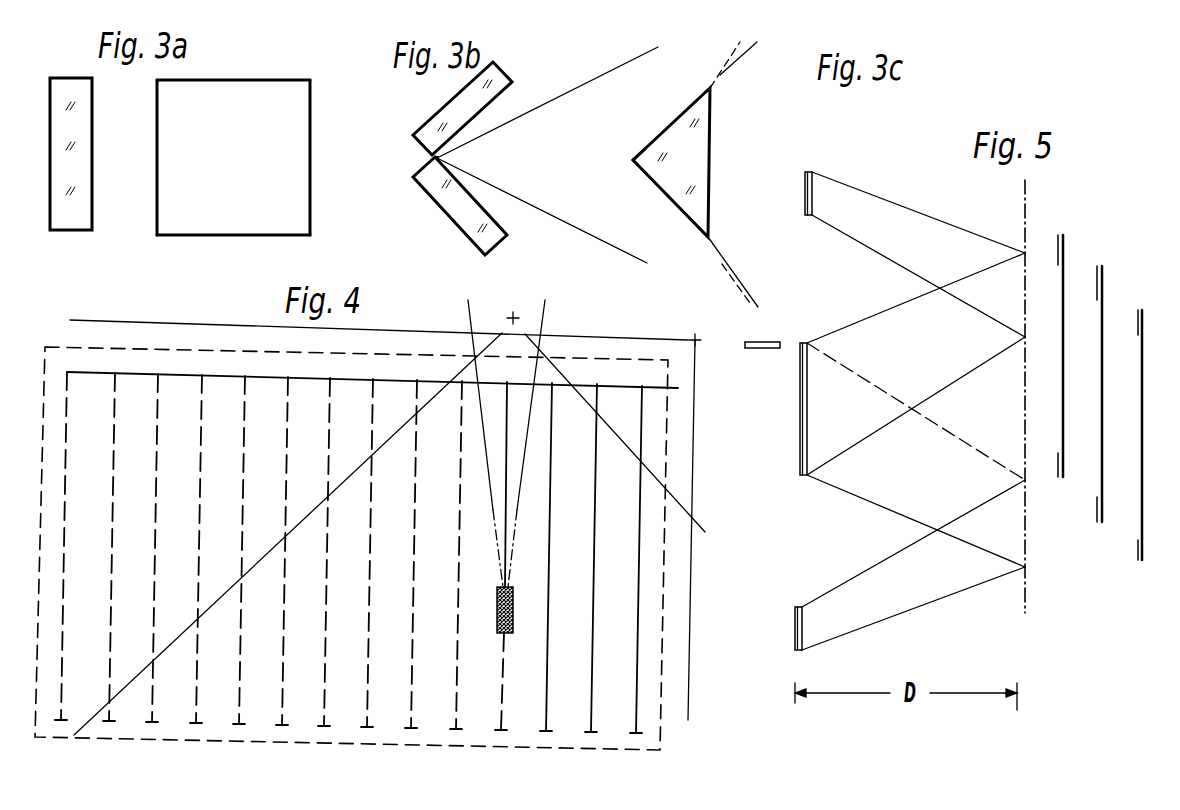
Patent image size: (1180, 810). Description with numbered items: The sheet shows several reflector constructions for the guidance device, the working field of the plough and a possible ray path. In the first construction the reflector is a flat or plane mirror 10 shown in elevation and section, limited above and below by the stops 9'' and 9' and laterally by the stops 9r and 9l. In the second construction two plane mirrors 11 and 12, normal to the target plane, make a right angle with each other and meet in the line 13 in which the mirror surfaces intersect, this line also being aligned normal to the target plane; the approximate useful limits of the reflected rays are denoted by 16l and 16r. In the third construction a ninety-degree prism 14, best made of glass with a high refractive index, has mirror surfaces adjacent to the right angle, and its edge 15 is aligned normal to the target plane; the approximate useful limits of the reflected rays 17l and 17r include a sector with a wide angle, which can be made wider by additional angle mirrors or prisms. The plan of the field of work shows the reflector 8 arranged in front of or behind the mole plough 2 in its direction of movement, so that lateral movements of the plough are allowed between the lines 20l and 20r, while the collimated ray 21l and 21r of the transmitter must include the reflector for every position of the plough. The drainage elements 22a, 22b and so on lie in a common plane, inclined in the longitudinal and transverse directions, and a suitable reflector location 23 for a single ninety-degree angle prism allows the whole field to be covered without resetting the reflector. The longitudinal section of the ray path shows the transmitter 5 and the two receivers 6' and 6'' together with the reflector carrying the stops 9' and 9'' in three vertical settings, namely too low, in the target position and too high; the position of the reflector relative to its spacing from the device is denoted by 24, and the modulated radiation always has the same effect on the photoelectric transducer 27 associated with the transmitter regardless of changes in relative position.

In FIG. 3A, the plane mirror 10 is at (82, 231).
In FIG. 3A, the lateral stop 9l is at (156, 157).
In FIG. 3A, the lateral stop 9r is at (312, 153).
In FIG. 3A, the lower stop 9' is at (233, 254).
In FIG. 5, the lower stop 9' is at (1086, 490).
In FIG. 3A, the upper stop 9'' is at (233, 56).
In FIG. 5, the upper stop 9'' is at (1087, 302).
In FIG. 3B, the plane mirror 11 is at (508, 75).
In FIG. 3B, the plane mirror 12 is at (498, 248).
In FIG. 3B, the intersection line 13 is at (432, 158).
In FIG. 3B, the useful limit of reflected rays 16r is at (552, 103).
In FIG. 3B, the useful limit of reflected rays 16l is at (628, 251).
In FIG. 3C, the 90° prism 14 is at (712, 181).
In FIG. 3C, the prism edge 15 is at (625, 162).
In FIG. 3C, the useful limit of reflected rays 17r is at (750, 50).
In FIG. 3C, the useful limit of reflected rays 17l is at (760, 293).
In FIG. 4, the mole plough 2 is at (497, 637).
In FIG. 4, the reflector 8 is at (513, 313).
In FIG. 5, the reflector 8 is at (1142, 582).
In FIG. 4, the collimated ray 21l is at (469, 316).
In FIG. 4, the collimated ray 21r is at (543, 318).
In FIG. 4, the limit line 20l is at (96, 713).
In FIG. 4, the limit line 20r is at (682, 500).
In FIG. 4, the drainage element 22a is at (640, 553).
In FIG. 4, the drainage element 22b is at (593, 542).
In FIG. 4, the reflector location 23 is at (695, 333).
In FIG. 5, the reflector position 24 is at (1018, 614).
In FIG. 5, the transmitter 5 is at (799, 410).
In FIG. 5, the receiver 6' is at (894, 565).
In FIG. 5, the receiver 6'' is at (895, 254).
In FIG. 5, the photoelectric transducer 27 is at (758, 349).